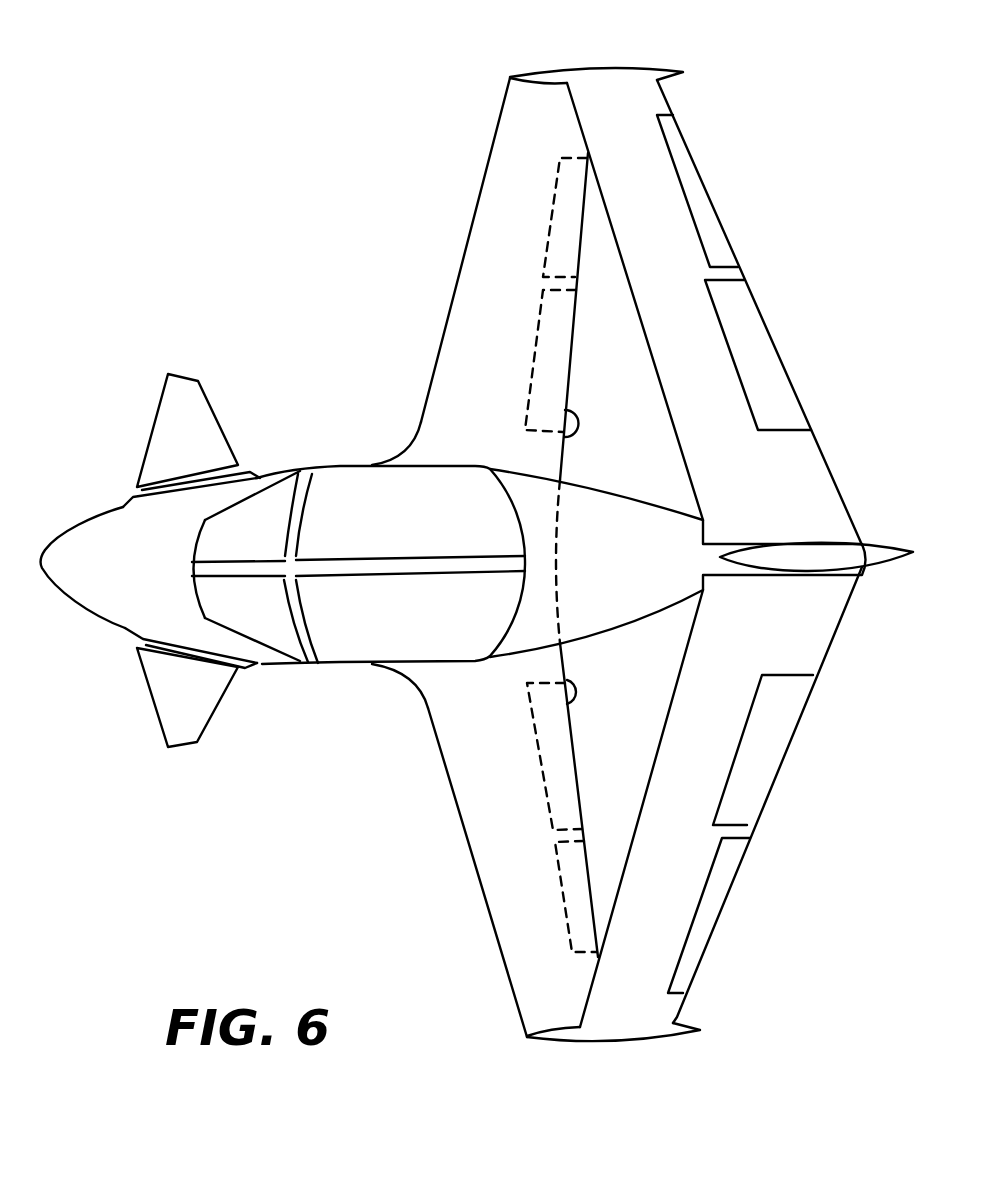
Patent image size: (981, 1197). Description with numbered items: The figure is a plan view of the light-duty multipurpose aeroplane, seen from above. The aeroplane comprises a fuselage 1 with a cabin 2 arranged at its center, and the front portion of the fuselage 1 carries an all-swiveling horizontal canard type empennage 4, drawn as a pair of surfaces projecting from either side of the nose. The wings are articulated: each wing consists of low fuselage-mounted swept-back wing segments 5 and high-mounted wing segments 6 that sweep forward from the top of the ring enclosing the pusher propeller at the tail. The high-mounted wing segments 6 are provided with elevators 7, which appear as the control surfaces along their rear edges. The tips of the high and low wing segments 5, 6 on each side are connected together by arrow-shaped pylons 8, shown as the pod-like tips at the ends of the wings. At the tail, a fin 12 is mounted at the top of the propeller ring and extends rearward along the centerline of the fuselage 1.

The fuselage 1 is at (92, 534).
The cabin 2 is at (333, 487).
The canard type empennage 4 is at (203, 700).
The swept-back wing segments 5 is at (482, 830).
The high-mounted wing segments 6 is at (683, 897).
The elevators 7 is at (728, 853).
The arrow-shaped pylons 8 is at (595, 78).
The fin 12 is at (707, 550).